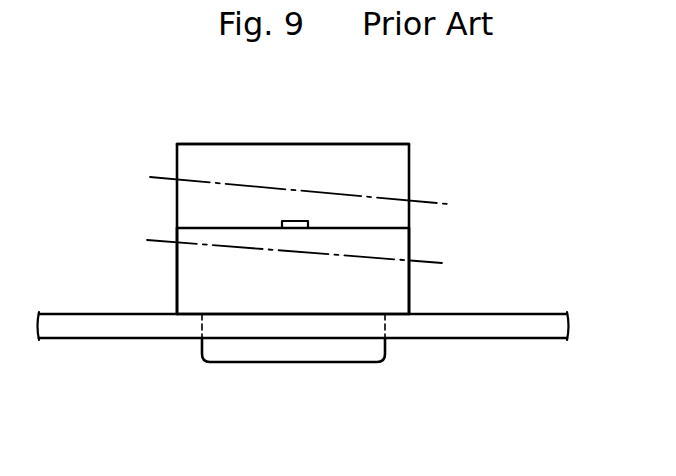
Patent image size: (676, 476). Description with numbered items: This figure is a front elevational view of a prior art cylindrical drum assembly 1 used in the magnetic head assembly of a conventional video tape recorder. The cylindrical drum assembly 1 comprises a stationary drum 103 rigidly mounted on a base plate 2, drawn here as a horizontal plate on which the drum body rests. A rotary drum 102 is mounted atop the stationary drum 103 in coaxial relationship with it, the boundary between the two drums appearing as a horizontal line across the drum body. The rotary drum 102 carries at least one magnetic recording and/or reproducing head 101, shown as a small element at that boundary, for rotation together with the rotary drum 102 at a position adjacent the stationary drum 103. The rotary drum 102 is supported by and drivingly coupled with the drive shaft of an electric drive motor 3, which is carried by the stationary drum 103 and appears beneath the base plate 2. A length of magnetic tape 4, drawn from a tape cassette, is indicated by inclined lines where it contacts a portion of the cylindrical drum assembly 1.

The cylindrical drum assembly 1 is at (233, 144).
The magnetic recording and/or reproducing head 101 is at (293, 221).
The rotary drum 102 is at (389, 144).
The stationary drum 103 is at (404, 291).
The base plate 2 is at (475, 340).
The electric drive motor 3 is at (323, 362).
The magnetic tape 4 is at (432, 199).